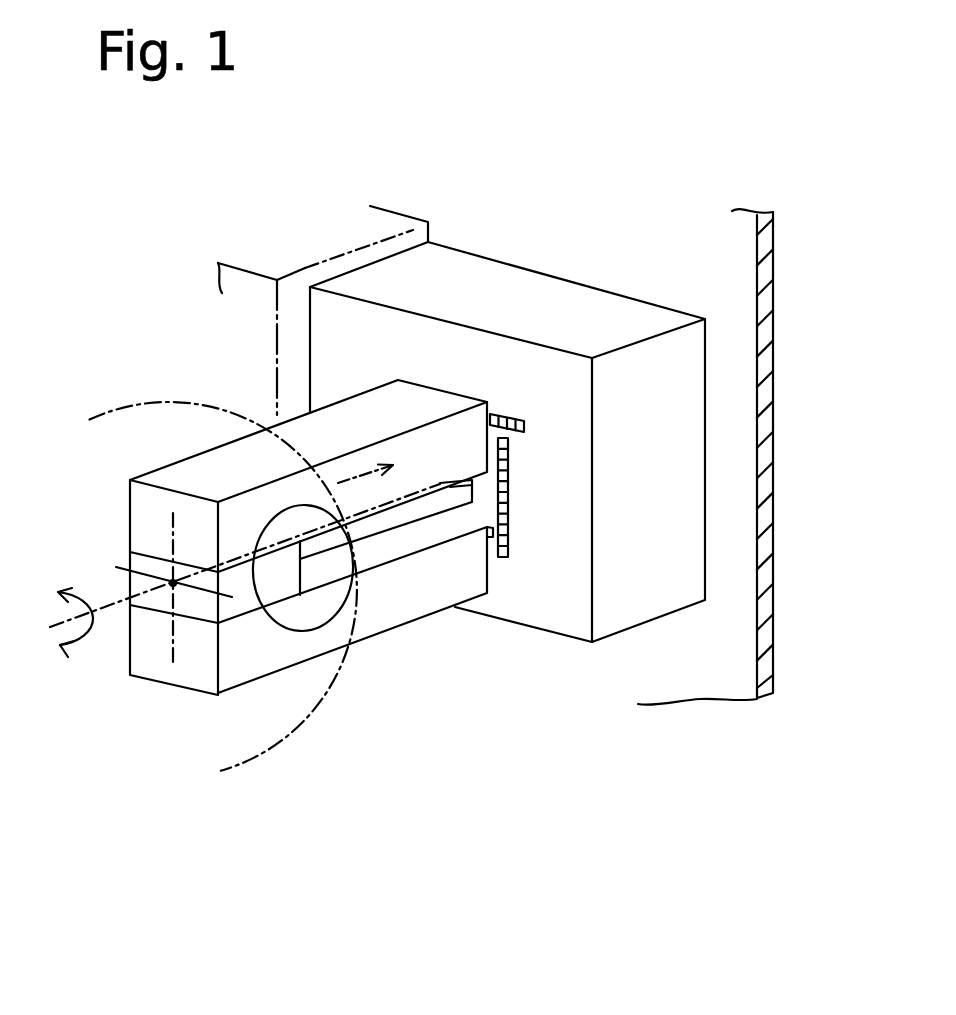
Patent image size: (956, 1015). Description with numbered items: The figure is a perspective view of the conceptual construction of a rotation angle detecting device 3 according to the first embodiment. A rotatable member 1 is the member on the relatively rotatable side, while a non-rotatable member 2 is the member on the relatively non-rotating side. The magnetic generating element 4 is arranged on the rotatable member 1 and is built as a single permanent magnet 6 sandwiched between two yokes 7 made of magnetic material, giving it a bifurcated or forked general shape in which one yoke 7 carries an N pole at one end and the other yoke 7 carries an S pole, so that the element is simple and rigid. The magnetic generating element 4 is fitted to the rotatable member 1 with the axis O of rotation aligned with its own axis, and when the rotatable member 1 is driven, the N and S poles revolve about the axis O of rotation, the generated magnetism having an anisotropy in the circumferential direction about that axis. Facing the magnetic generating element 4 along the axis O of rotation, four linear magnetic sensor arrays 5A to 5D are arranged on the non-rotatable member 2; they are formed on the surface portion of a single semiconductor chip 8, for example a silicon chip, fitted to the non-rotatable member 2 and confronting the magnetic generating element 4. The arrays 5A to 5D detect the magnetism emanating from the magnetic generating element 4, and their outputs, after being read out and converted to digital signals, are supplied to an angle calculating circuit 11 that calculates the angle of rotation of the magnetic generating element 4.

The rotatable member 1 is at (300, 732).
The non-rotatable member 2 is at (732, 542).
The rotation angle detecting device 3 is at (455, 765).
The magnetic generating element 4 is at (405, 628).
The magnetic sensor array 5A is at (520, 500).
The magnetic sensor array 5D is at (589, 600).
The permanent magnet 6 is at (164, 597).
The yoke 7 is at (203, 474).
The semiconductor chip 8 is at (678, 422).
The angle calculating circuit 11 is at (458, 506).
The axis of rotation O is at (128, 550).